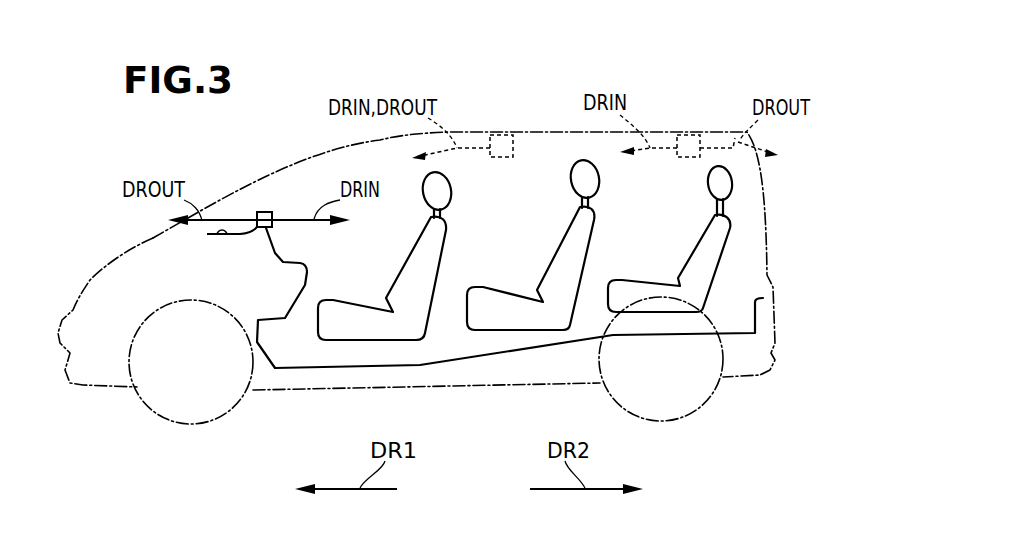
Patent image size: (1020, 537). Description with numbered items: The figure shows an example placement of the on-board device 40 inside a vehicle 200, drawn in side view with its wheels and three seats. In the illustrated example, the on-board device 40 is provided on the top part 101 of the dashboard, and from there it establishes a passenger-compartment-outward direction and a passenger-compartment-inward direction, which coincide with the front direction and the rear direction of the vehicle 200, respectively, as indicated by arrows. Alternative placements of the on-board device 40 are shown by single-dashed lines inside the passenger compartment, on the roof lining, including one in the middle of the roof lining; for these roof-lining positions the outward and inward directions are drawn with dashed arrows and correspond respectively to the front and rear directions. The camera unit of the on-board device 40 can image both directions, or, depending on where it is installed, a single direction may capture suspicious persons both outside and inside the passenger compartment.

The vehicle 200 is at (97, 273).
The on-board device 40 is at (261, 212).
The top part of the dashboard 101 is at (221, 239).